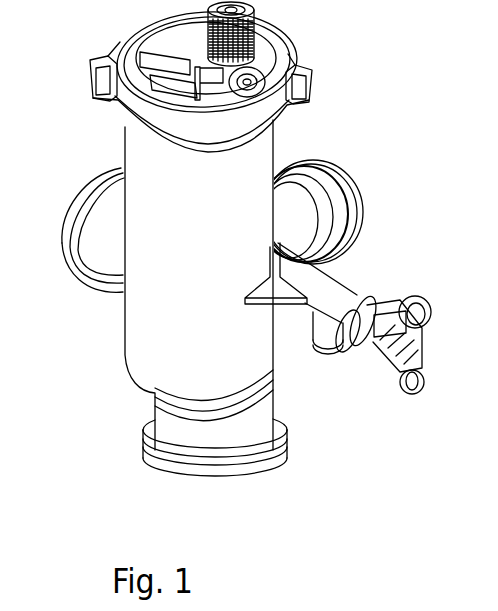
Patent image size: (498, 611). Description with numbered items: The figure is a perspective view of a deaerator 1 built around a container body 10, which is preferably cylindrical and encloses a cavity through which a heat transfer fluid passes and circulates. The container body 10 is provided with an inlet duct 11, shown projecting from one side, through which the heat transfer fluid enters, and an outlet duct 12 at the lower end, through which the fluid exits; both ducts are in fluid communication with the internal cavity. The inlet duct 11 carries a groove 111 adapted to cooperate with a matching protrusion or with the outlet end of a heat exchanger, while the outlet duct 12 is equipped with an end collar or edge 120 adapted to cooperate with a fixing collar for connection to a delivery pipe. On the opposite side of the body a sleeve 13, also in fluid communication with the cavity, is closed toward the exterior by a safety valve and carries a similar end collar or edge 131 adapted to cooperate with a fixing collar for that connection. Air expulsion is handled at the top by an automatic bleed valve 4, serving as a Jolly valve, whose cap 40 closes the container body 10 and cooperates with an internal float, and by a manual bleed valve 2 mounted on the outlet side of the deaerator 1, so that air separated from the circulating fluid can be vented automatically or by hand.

The deaerator 1 is at (342, 141).
The manual bleed valve 2 is at (387, 372).
The automatic bleed valve 4 is at (254, 18).
The container body 10 is at (158, 350).
The inlet duct 11 is at (348, 202).
The outlet duct 12 is at (198, 442).
The sleeve 13 is at (102, 215).
The cap 40 is at (165, 26).
The groove 111 is at (355, 228).
The end collar or edge 120 is at (253, 470).
The end collar or edge 131 is at (87, 283).